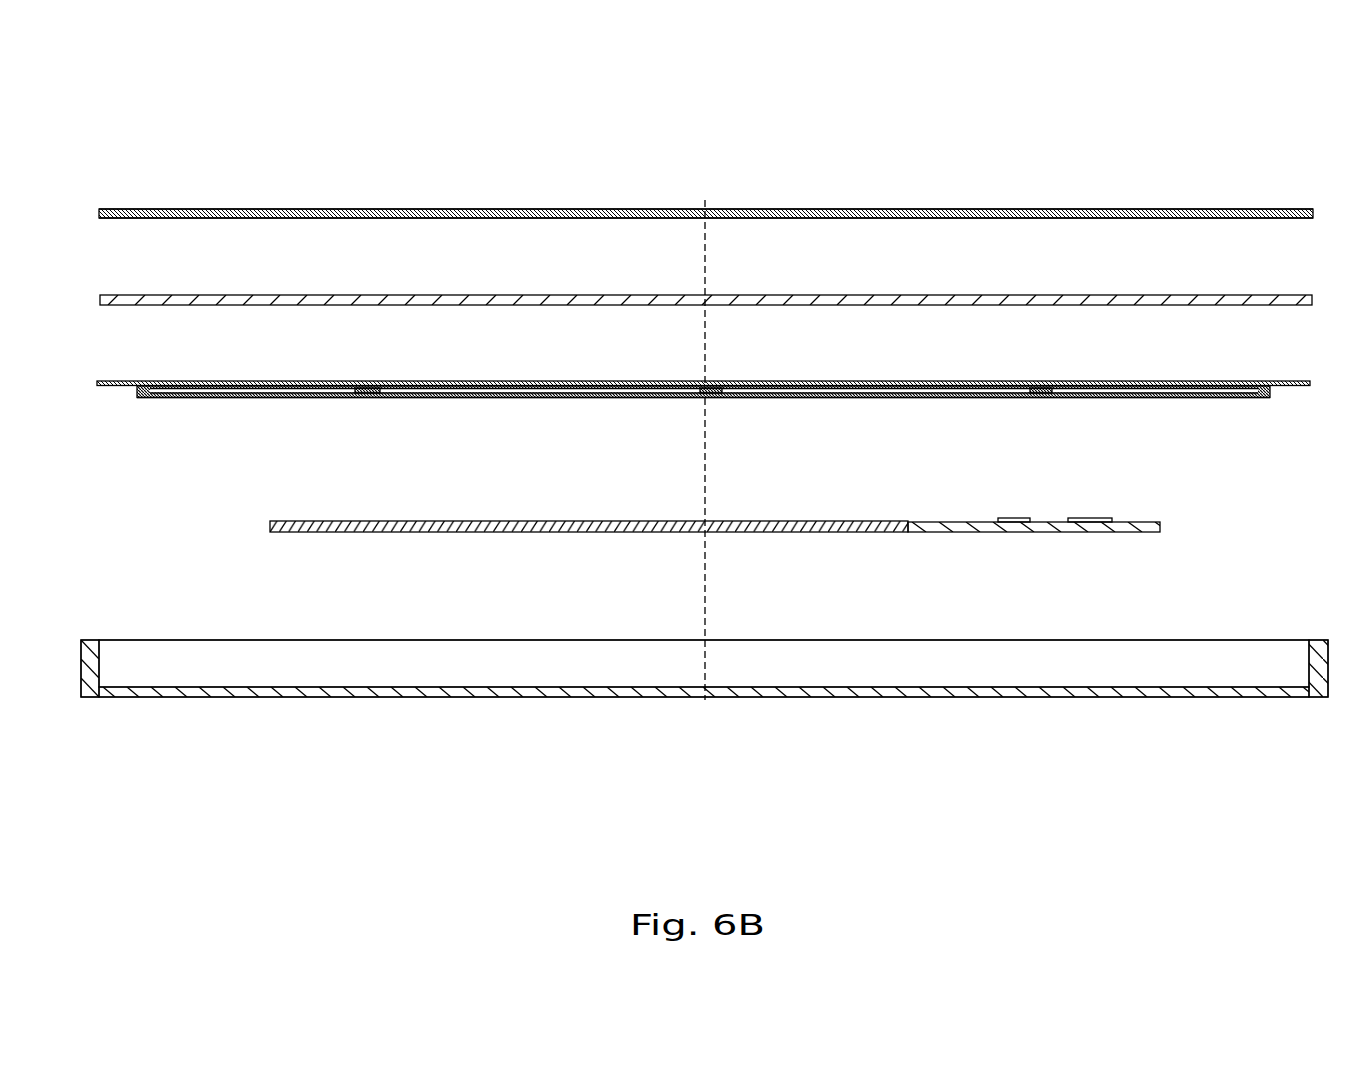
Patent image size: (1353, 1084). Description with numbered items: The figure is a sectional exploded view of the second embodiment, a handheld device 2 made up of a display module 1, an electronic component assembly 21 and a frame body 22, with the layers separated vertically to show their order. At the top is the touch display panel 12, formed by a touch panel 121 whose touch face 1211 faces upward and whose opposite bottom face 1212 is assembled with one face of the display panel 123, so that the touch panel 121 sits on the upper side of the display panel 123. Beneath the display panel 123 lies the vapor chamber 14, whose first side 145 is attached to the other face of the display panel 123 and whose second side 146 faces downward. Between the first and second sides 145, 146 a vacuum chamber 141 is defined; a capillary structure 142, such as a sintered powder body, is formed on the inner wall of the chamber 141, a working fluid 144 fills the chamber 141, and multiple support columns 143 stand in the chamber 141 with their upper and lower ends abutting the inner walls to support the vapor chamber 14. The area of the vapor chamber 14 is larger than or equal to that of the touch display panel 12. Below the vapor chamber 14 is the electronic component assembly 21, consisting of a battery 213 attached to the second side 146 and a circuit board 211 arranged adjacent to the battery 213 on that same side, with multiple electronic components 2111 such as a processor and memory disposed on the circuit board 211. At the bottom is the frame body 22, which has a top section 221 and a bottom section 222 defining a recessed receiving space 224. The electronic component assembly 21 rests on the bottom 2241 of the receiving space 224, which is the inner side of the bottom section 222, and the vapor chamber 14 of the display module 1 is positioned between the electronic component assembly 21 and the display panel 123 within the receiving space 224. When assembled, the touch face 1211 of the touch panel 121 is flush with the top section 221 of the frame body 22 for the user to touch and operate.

The display module 1 is at (335, 762).
The handheld device 2 is at (1185, 156).
The touch display panel 12 is at (186, 762).
The vapor chamber 14 is at (137, 392).
The electronic component assembly 21 is at (482, 770).
The frame body 22 is at (1328, 645).
The touch panel 121 is at (285, 209).
The display panel 123 is at (500, 296).
The vacuum chamber 141 is at (262, 398).
The capillary structure 142 is at (218, 398).
The support columns 143 is at (370, 398).
The working fluid 144 is at (338, 398).
The first side 145 is at (1275, 383).
The second side 146 is at (1260, 396).
The circuit board 211 is at (1162, 527).
The battery 213 is at (270, 521).
The top section 221 is at (92, 645).
The bottom section 222 is at (1125, 698).
The receiving space 224 is at (357, 660).
The touch face 1211 is at (308, 209).
The bottom face 1212 is at (218, 219).
The electronic components 2111 is at (1015, 523).
The bottom 2241 is at (1203, 687).